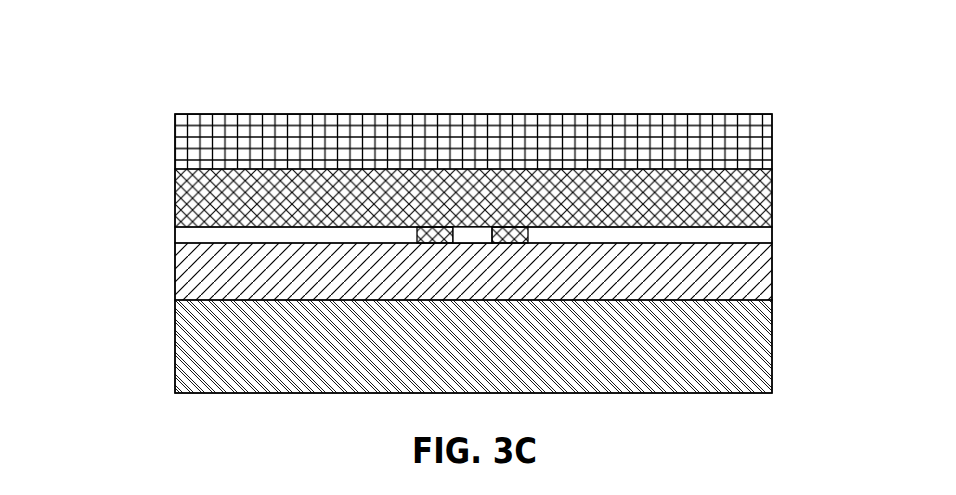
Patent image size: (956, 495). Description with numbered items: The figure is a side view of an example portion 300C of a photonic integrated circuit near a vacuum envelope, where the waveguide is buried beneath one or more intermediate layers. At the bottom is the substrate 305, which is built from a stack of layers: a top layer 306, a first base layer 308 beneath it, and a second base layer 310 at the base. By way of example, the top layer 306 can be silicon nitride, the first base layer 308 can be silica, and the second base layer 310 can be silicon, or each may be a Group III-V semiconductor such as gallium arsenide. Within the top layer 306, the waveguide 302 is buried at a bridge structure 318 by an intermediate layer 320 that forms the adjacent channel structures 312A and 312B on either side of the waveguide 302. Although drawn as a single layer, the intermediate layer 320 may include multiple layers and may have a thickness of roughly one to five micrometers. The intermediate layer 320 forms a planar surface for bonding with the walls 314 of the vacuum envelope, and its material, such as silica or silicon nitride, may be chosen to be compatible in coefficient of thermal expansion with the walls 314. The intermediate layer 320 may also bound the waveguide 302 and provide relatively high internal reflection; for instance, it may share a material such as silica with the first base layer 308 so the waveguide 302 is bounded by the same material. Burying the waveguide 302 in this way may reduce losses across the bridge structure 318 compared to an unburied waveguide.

The portion of a photonic integrated circuit 300C is at (168, 46).
The waveguide 302 is at (473, 233).
The substrate 305 is at (138, 393).
The top layer 306 is at (772, 237).
The first base layer 308 is at (772, 293).
The second base layer 310 is at (772, 376).
The channel structure 312A is at (438, 233).
The channel structure 312B is at (518, 240).
The walls 314 is at (774, 132).
The bridge structure 318 is at (408, 189).
The intermediate layer 320 is at (772, 206).